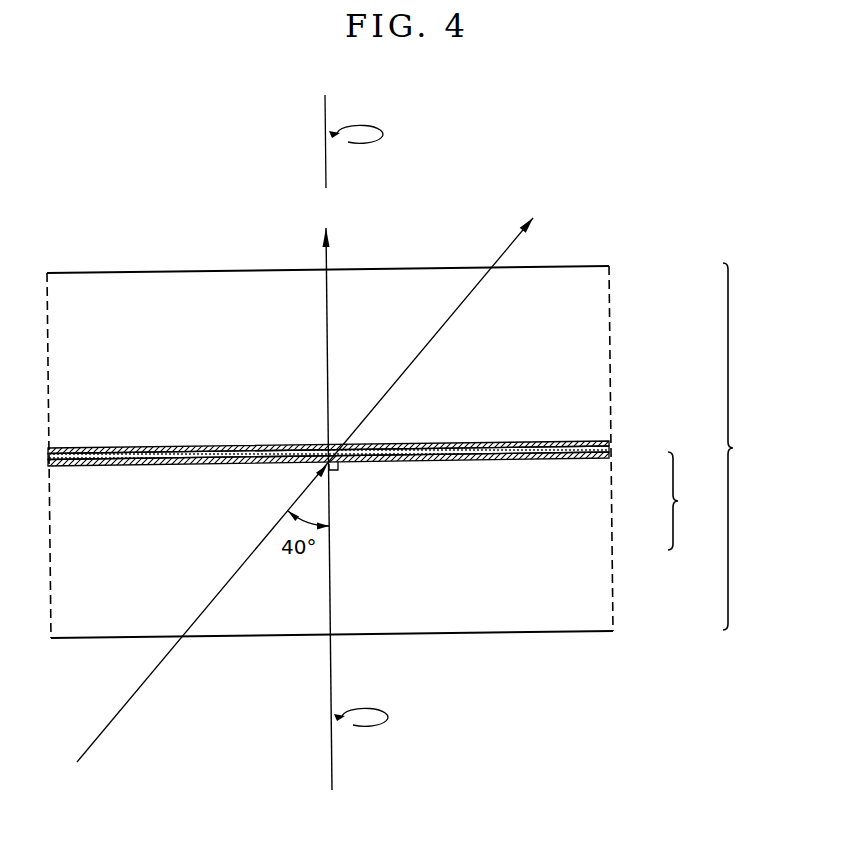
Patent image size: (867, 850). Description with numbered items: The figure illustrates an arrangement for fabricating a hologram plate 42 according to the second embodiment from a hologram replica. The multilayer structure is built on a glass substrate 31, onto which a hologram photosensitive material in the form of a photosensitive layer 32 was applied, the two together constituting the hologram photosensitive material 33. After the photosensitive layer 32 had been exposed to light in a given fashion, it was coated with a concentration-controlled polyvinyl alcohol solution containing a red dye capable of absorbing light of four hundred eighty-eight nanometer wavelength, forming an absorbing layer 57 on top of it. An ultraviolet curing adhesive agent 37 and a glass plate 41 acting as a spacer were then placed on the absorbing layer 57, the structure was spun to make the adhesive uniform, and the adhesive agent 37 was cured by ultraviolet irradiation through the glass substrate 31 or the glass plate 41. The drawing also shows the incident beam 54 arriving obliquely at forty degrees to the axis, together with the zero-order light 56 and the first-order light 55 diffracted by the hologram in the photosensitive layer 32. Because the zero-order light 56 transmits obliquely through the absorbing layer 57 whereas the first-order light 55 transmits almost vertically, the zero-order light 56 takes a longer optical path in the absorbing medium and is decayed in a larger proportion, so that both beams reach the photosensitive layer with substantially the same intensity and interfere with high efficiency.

The glass substrate 31 is at (600, 543).
The photosensitive layer 32 is at (610, 457).
The hologram photosensitive material 33 is at (690, 501).
The ultraviolet curing adhesive agent 37 is at (610, 442).
The glass plate 41 is at (598, 363).
The hologram plate 42 is at (746, 446).
The incident light beam 54 is at (123, 707).
The first-order light 55 is at (328, 259).
The zero-order light 56 is at (505, 252).
The absorbing layer 57 is at (610, 450).